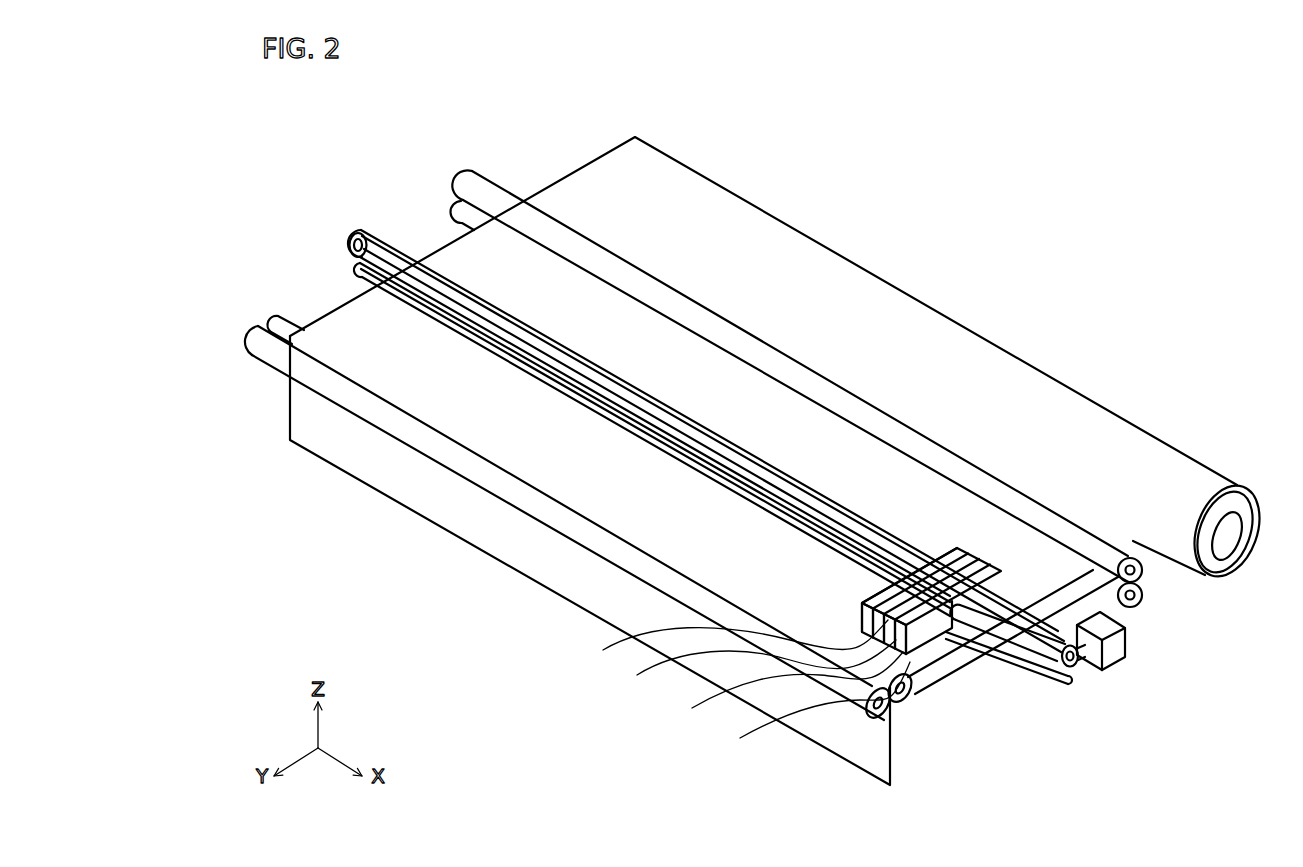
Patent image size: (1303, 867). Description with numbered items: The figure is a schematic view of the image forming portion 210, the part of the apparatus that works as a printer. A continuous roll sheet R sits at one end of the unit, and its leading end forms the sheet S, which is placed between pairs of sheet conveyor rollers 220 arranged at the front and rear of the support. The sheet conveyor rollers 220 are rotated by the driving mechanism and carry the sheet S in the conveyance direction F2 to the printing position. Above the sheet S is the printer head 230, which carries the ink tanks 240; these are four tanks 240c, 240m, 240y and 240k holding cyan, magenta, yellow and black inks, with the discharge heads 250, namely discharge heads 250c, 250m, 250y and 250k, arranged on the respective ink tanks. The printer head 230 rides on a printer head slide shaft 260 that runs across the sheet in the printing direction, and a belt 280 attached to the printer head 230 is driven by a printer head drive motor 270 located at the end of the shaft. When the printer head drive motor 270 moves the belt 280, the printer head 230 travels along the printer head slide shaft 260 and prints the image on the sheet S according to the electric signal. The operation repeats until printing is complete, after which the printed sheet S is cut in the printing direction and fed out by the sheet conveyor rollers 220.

The image forming portion 210 is at (944, 184).
The sheet conveyor rollers 220 is at (1147, 566).
The printer head 230 is at (956, 656).
The ink tanks 240 is at (997, 449).
The ink tank 240c is at (883, 598).
The ink tank 240m is at (905, 596).
The ink tank 240y is at (930, 592).
The ink tank 240k is at (945, 595).
The discharge heads 250 is at (718, 696).
The discharge head 250c is at (715, 644).
The discharge head 250m is at (743, 668).
The discharge head 250y is at (768, 687).
The discharge head 250k is at (796, 707).
The printer head slide shaft 260 is at (1043, 668).
The printer head drive motor 270 is at (1127, 646).
The belt 280 is at (1075, 680).
The sheet S is at (1128, 440).
The roll sheet R is at (1245, 500).
The conveyance direction F2 is at (492, 111).